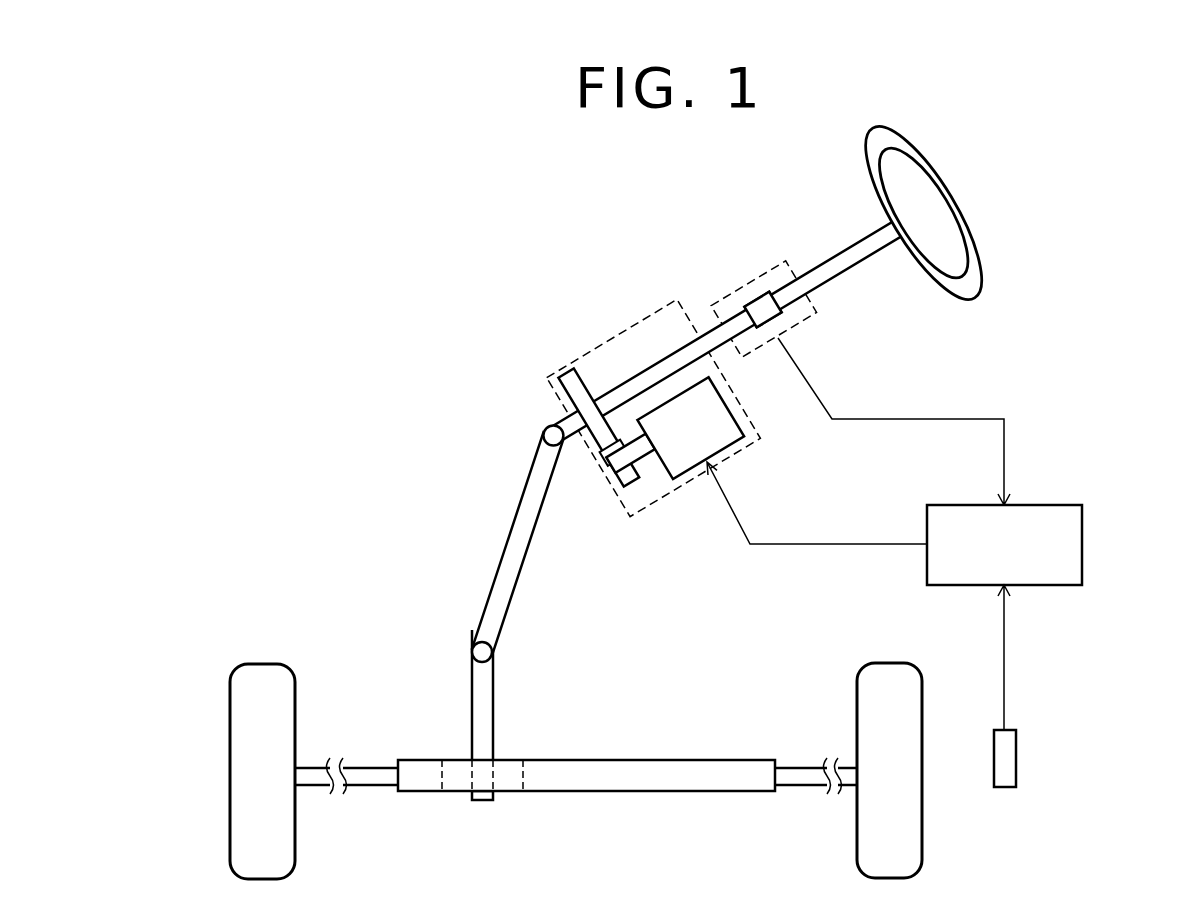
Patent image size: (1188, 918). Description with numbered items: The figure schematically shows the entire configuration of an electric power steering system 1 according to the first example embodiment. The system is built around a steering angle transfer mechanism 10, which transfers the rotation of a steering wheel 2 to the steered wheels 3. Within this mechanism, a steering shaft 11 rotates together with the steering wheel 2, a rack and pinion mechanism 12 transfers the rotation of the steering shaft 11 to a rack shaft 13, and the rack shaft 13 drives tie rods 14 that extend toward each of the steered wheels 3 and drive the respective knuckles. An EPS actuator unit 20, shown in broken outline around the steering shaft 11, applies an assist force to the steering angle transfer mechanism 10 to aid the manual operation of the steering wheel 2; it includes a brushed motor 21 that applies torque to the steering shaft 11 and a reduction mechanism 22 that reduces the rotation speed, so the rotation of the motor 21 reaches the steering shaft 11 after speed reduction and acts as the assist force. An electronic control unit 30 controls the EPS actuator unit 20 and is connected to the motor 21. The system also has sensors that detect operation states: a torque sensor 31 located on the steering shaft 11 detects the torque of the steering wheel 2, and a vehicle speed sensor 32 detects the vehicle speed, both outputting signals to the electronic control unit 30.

The electric power steering system 1 is at (622, 209).
The steering wheel 2 is at (973, 237).
The steered wheels 3 is at (259, 665).
The steering angle transfer mechanism 10 is at (413, 423).
The steering shaft 11 is at (516, 519).
The rack and pinion mechanism 12 is at (512, 767).
The rack shaft 13 is at (598, 760).
The tie rods 14 is at (366, 768).
The EPS actuator unit 20 is at (623, 330).
The motor 21 is at (692, 477).
The reduction mechanism 22 is at (607, 478).
The electronic control unit 30 is at (1083, 540).
The torque sensor 31 is at (771, 270).
The vehicle speed sensor 32 is at (1017, 757).